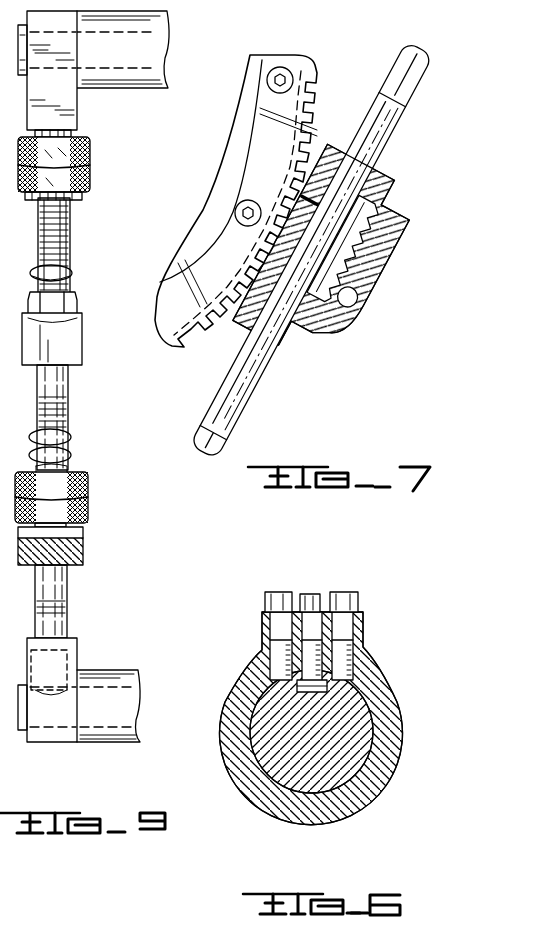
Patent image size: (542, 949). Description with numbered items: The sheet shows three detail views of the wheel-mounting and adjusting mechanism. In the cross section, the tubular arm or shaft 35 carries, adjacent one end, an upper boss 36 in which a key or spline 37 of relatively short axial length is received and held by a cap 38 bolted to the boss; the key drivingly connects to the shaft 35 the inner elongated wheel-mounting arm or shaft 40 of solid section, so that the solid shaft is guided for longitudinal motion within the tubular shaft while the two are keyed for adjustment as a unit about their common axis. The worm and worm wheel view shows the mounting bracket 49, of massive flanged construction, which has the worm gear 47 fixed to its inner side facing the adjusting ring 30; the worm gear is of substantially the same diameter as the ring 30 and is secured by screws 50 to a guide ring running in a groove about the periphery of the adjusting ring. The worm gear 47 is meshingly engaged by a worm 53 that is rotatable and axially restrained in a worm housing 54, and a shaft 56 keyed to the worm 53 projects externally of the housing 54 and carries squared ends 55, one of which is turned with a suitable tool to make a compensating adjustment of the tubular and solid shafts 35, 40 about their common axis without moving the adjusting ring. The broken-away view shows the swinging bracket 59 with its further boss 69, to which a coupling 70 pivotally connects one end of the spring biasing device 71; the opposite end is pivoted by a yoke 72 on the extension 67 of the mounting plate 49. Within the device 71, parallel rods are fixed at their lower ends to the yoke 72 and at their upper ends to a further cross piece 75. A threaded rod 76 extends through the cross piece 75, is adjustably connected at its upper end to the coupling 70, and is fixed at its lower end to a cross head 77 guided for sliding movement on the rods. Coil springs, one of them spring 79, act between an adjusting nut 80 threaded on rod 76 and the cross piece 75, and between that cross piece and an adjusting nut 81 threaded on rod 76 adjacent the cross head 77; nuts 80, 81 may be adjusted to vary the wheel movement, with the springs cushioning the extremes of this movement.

In FIG. 9, the swinging bracket 59 is at (172, 30).
In FIG. 9, the further boss 69 is at (148, 78).
In FIG. 9, the coupling 70 is at (72, 98).
In FIG. 9, the adjusting nut 80 is at (90, 150).
In FIG. 9, the threaded rod 76 is at (66, 240).
In FIG. 9, the spring biasing device 71 is at (80, 268).
In FIG. 9, the cross piece 75 is at (74, 355).
In FIG. 9, the coil spring 79 is at (70, 428).
In FIG. 9, the adjusting nut 81 is at (86, 490).
In FIG. 9, the cross head 77 is at (84, 557).
In FIG. 9, the yoke 72 is at (68, 667).
In FIG. 9, the mounting bracket 49 is at (126, 668).
In FIG. 9, the extension 67 is at (118, 732).
In FIG. 7, the screws 50 is at (290, 73).
In FIG. 7, the worm gear 47 is at (318, 102).
In FIG. 7, the adjusting ring 30 is at (320, 124).
In FIG. 7, the squared ends 55 is at (418, 85).
In FIG. 7, the worm housing 54 is at (377, 270).
In FIG. 7, the worm 53 is at (340, 305).
In FIG. 7, the shaft 56 is at (265, 335).
In FIG. 6, the cap 38 is at (352, 630).
In FIG. 6, the upper boss 36 is at (356, 645).
In FIG. 6, the tubular arm or shaft 35 is at (386, 705).
In FIG. 6, the key or spline 37 is at (297, 684).
In FIG. 6, the wheel-mounting arm or shaft 40 is at (365, 742).